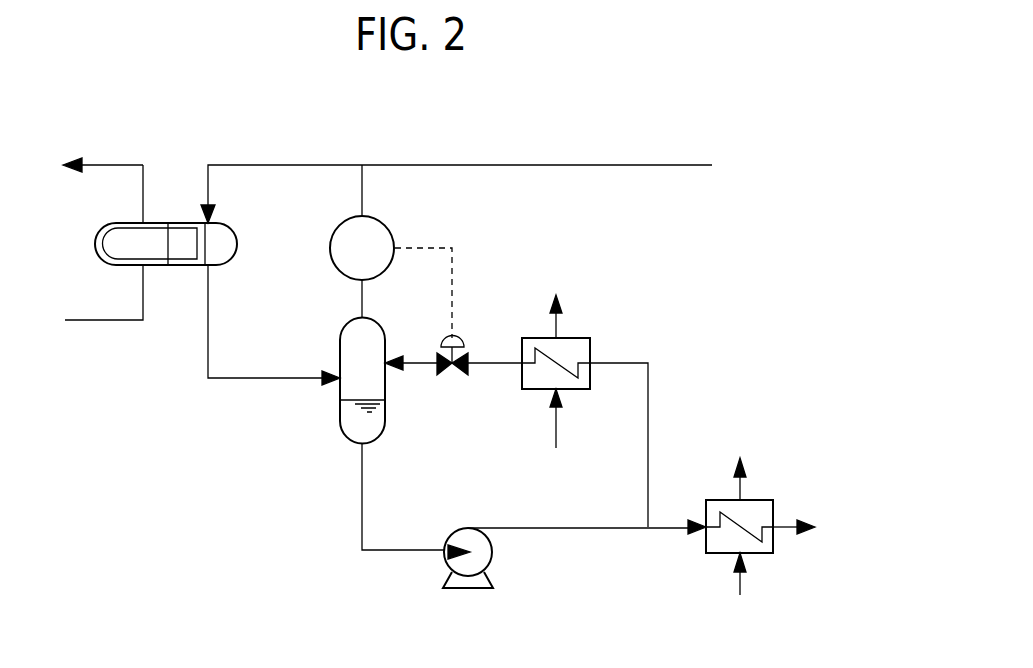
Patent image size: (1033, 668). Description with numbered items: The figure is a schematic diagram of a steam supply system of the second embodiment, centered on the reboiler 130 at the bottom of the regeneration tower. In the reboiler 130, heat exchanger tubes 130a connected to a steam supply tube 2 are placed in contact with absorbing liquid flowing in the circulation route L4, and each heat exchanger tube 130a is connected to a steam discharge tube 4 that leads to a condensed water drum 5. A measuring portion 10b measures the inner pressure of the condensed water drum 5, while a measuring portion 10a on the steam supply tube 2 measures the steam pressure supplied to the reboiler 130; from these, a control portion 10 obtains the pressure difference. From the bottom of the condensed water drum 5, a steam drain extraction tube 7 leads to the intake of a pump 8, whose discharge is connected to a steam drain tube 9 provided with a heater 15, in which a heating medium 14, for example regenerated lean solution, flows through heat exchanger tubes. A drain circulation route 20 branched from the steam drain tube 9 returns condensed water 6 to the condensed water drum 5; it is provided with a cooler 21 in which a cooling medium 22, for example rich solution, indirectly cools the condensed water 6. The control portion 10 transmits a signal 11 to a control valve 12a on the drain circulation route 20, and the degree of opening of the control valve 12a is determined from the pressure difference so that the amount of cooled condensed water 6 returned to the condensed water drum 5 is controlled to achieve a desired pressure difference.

The steam supply tube 2 is at (250, 163).
The steam discharge tube 4 is at (210, 310).
The condensed water drum 5 is at (338, 348).
The condensed water 6 is at (377, 418).
The steam drain extraction tube 7 is at (362, 493).
The pump 8 is at (461, 526).
The steam drain tube 9 is at (557, 530).
The control portion 10 is at (389, 229).
The measuring portion 10a is at (365, 168).
The measuring portion 10b is at (362, 315).
The signal 11 is at (454, 263).
The control valve 12a is at (447, 337).
The heating medium 14 is at (740, 487).
The heater 15 is at (762, 498).
The drain circulation route 20 is at (497, 367).
The cooler 21 is at (577, 335).
The cooling medium 22 is at (553, 323).
The reboiler 130 is at (232, 226).
The heat exchanger tube 130a is at (173, 222).
The circulation route L4 is at (117, 160).